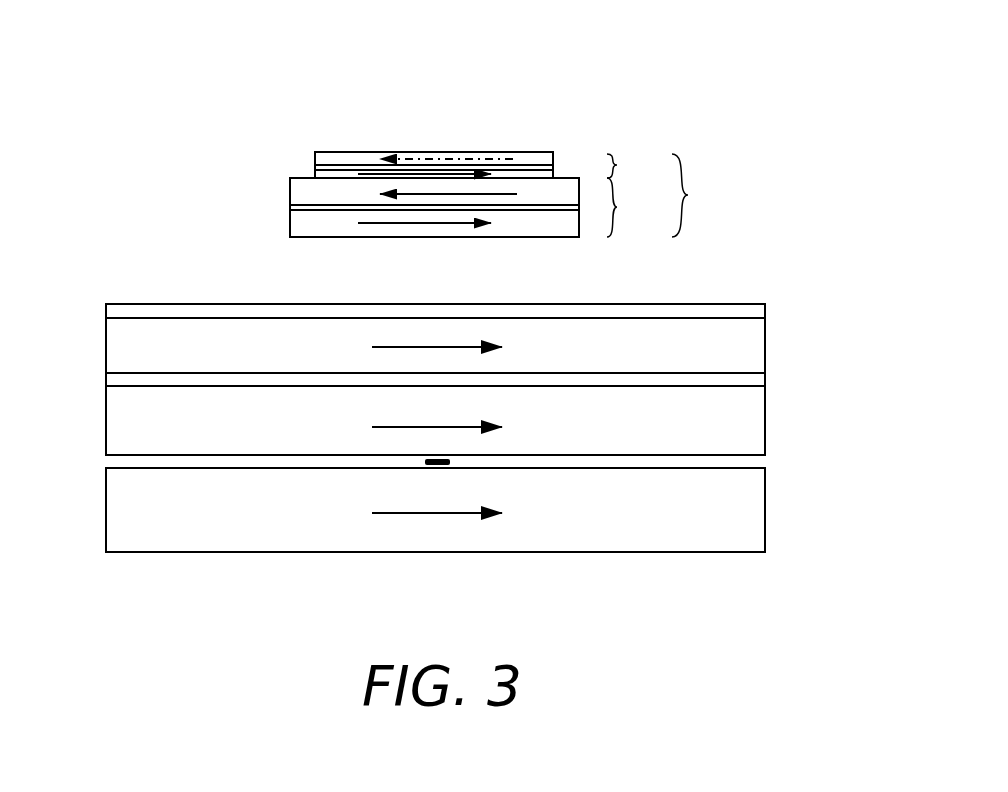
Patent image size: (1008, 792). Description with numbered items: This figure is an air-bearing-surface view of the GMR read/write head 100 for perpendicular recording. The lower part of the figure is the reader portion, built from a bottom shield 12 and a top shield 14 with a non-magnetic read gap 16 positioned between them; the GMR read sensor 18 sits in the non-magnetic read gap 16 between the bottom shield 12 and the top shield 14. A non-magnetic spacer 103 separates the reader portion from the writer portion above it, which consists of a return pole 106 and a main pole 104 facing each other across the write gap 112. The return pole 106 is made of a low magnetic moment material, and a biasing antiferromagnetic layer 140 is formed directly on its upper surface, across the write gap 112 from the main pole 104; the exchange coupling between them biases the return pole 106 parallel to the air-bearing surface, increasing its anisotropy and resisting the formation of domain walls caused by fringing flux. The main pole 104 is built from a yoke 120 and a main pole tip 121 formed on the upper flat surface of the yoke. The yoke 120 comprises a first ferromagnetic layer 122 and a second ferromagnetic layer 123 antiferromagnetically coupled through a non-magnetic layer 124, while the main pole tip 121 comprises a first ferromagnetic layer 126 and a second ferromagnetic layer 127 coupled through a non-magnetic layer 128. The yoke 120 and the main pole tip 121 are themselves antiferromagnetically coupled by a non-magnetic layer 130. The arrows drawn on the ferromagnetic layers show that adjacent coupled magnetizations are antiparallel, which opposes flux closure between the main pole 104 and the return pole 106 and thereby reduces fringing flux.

The GMR read/write head 100 is at (792, 124).
The bottom shield 12 is at (128, 522).
The top shield 14 is at (128, 418).
The non-magnetic read gap 16 is at (748, 462).
The GMR read sensor 18 is at (418, 463).
The non-magnetic spacer 103 is at (120, 380).
The main pole 104 is at (707, 195).
The return pole 106 is at (128, 345).
The write gap 112 is at (415, 281).
The yoke 120 is at (483, 207).
The main pole tip 121 is at (488, 166).
The first ferromagnetic layer 122 is at (303, 223).
The second ferromagnetic layer 123 is at (312, 198).
The non-magnetic layer 124 is at (345, 205).
The first ferromagnetic layer 126 is at (317, 175).
The second ferromagnetic layer 127 is at (545, 160).
The non-magnetic layer 128 is at (327, 168).
The non-magnetic layer 130 is at (527, 177).
The biasing antiferromagnetic layer 140 is at (698, 310).